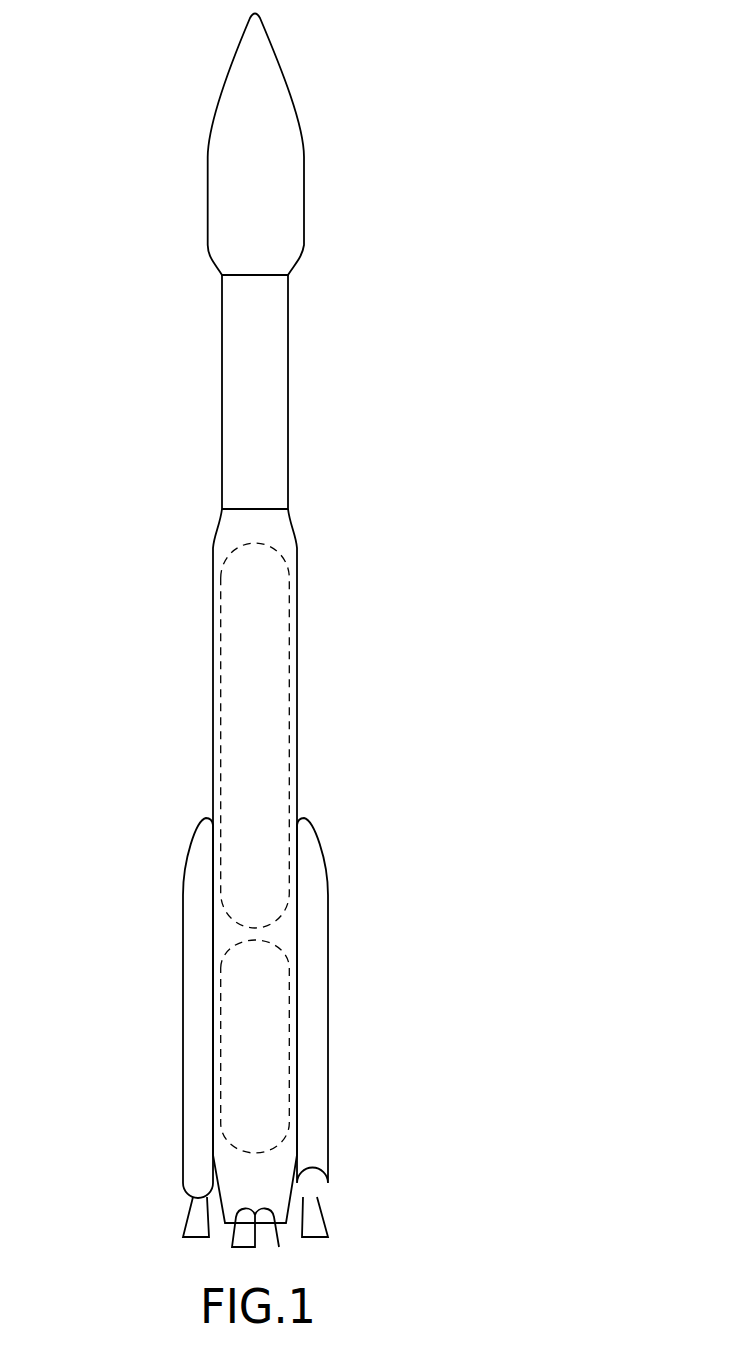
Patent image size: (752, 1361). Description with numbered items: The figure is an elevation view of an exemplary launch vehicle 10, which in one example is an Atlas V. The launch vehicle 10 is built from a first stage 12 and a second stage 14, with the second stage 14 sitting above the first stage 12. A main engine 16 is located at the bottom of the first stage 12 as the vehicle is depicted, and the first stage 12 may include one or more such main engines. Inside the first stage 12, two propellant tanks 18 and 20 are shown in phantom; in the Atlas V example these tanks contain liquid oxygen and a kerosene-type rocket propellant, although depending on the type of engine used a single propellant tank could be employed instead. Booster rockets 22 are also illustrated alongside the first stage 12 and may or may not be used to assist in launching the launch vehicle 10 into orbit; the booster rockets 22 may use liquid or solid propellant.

The launch vehicle 10 is at (297, 631).
The first stage 12 is at (297, 653).
The second stage 14 is at (304, 210).
The main engine 16 is at (265, 1232).
The propellant tank 18 is at (262, 1030).
The propellant tank 20 is at (255, 762).
The booster rockets 22 is at (188, 1059).